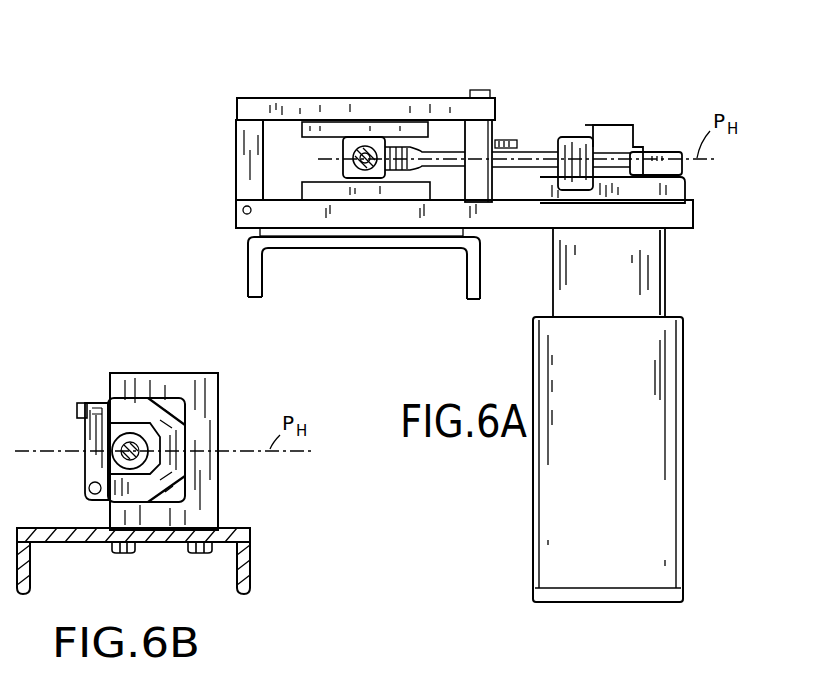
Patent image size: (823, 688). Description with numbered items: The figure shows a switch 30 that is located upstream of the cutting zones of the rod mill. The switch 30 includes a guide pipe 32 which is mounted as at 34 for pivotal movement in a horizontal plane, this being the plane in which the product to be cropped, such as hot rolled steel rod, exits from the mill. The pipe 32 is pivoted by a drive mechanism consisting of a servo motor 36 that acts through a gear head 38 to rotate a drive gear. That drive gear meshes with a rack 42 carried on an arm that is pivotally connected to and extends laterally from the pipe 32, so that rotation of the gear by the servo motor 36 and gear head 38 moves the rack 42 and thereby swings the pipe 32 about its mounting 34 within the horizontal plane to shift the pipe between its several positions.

In FIG. 6A, the switch 30 is at (632, 97).
In FIG. 6A, the guide pipe 32 is at (340, 137).
In FIG. 6B, the pivotal mounting 34 is at (246, 388).
In FIG. 6A, the servo motor 36 is at (673, 353).
In FIG. 6A, the gear head 38 is at (677, 188).
In FIG. 6A, the rack 42 is at (530, 160).